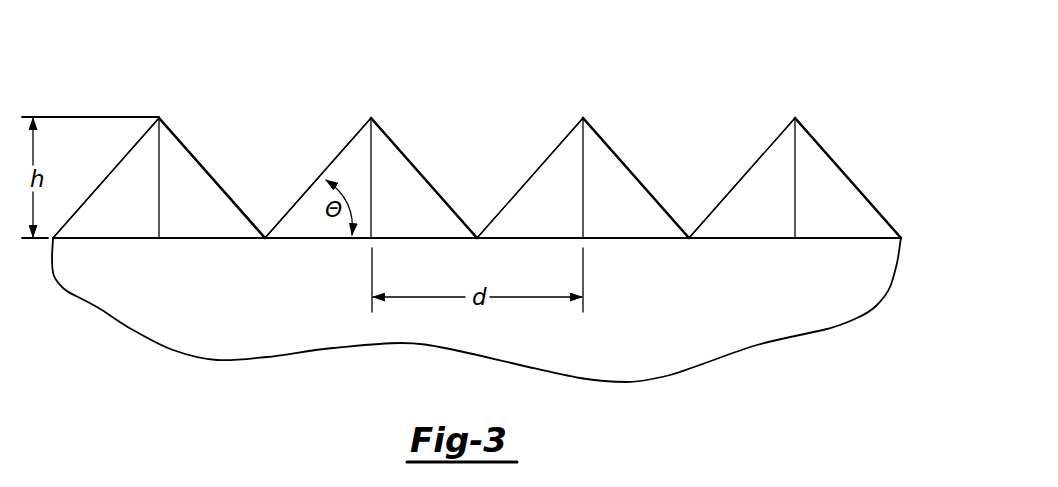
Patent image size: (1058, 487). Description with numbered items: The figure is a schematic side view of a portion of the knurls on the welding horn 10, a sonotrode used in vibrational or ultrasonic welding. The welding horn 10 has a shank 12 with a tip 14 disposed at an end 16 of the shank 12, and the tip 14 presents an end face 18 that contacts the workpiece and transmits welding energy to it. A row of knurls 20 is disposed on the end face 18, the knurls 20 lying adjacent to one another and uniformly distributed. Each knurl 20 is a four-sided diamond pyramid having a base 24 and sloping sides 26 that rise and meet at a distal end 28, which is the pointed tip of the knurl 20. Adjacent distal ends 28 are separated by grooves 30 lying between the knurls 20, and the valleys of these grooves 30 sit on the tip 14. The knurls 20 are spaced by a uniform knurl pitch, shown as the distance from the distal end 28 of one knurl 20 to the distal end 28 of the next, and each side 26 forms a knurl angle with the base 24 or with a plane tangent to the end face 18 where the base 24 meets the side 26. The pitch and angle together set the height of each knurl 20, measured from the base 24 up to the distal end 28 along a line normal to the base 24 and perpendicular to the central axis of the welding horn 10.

The welding horn 10 is at (108, 57).
The shank 12 is at (745, 320).
The tip 14 is at (905, 236).
The end of the shank 16 is at (255, 107).
The end face 18 is at (688, 236).
The knurl 20 is at (183, 128).
The base 24 is at (115, 240).
The sloping side 26 is at (110, 203).
The distal end 28 is at (159, 118).
The groove 30 is at (272, 180).